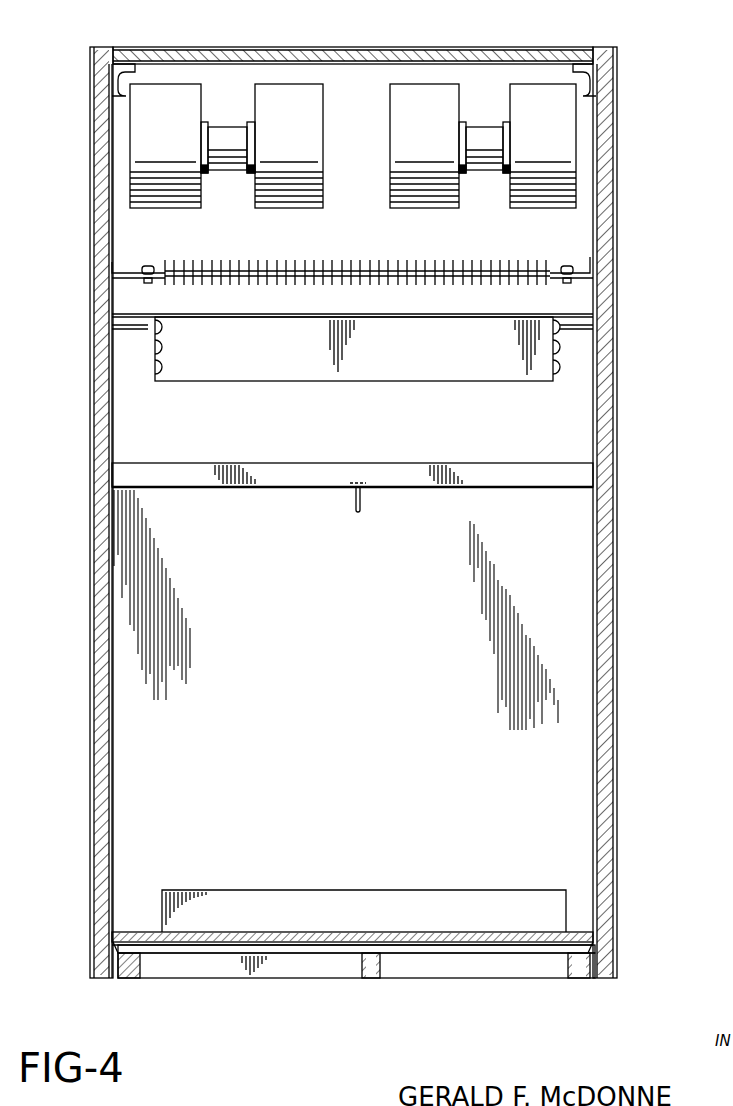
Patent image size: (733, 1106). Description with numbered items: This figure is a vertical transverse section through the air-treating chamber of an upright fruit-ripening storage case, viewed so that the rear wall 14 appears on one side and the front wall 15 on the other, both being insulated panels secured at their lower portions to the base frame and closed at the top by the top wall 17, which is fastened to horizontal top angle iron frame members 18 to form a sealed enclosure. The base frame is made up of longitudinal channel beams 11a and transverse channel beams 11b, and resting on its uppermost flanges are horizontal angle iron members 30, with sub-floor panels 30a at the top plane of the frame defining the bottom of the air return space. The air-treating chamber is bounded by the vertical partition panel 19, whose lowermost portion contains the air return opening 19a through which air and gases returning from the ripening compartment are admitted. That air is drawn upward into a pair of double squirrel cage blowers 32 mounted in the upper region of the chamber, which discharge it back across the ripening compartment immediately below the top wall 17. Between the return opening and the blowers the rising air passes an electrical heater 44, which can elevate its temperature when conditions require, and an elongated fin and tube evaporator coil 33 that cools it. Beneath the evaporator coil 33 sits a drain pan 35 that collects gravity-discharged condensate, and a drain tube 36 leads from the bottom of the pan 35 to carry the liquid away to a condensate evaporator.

The longitudinal channel beams 11a is at (132, 980).
The transverse channel beams 11b is at (305, 965).
The rear wall 14 is at (92, 628).
The front wall 15 is at (616, 562).
The top wall 17 is at (527, 46).
The horizontal top angle iron frame members 18 is at (119, 93).
The vertical partition panel 19 is at (578, 531).
The air return opening 19a is at (455, 888).
The horizontal angle iron members 30 is at (288, 930).
The sub-floor panels 30a is at (360, 932).
The double squirrel cage blowers 32 is at (304, 153).
The evaporator coil 33 is at (426, 384).
The drain pan 35 is at (312, 462).
The drain tube 36 is at (364, 507).
The electrical heater 44 is at (472, 266).